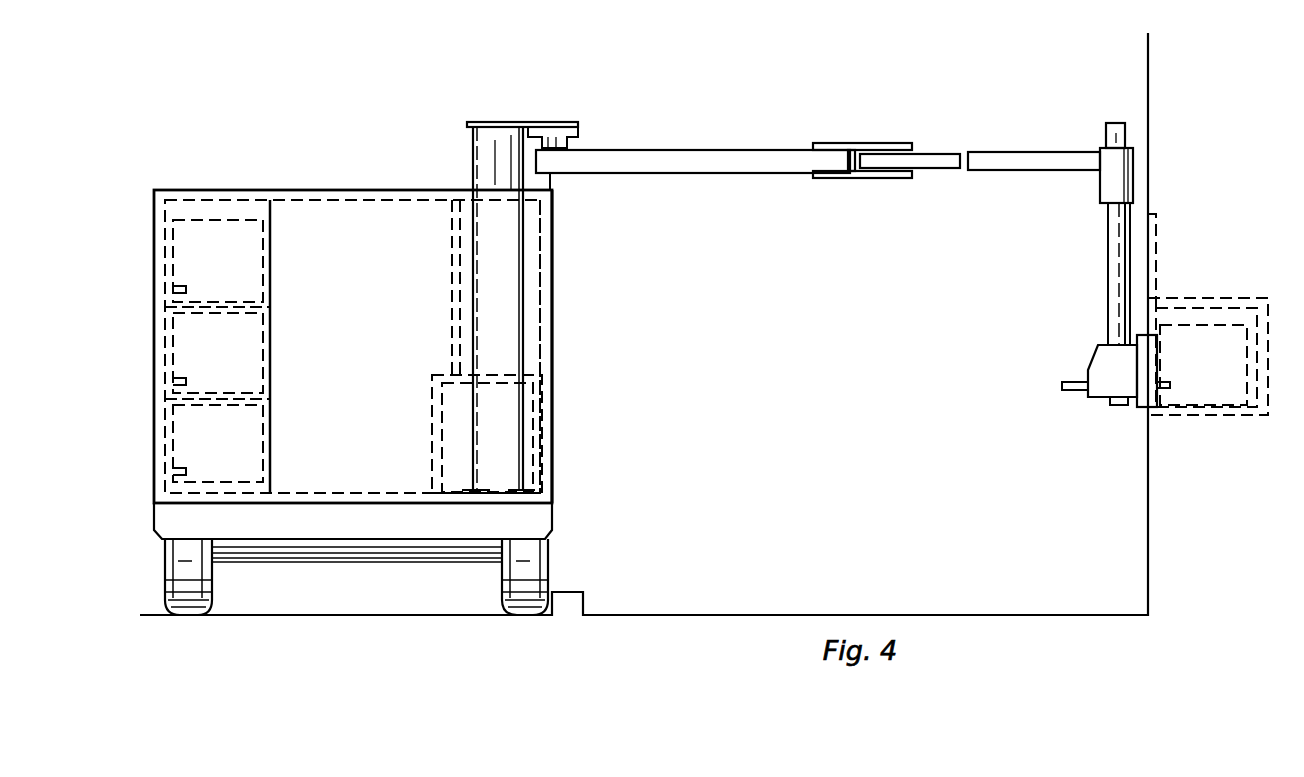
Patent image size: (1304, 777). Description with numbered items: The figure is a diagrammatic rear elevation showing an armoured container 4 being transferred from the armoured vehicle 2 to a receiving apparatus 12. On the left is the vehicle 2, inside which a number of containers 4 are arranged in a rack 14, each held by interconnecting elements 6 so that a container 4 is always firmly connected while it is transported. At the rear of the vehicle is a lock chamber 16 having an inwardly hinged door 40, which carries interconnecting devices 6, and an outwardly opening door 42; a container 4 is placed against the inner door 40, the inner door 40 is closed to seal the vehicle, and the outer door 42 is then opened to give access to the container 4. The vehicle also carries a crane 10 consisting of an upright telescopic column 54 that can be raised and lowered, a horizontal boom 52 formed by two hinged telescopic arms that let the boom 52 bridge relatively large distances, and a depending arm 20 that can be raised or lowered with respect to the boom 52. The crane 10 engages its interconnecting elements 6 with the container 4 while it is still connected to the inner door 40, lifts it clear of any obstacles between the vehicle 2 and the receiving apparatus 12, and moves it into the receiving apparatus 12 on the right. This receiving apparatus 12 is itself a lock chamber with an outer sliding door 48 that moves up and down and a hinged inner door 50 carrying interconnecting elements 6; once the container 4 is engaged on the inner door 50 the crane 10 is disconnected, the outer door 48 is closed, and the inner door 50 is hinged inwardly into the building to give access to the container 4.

The armoured vehicle 2 is at (278, 157).
The armoured container 4 is at (187, 248).
The interconnecting elements 6 is at (183, 380).
The crane 10 is at (888, 178).
The receiving apparatus 12 is at (1213, 300).
The rack 14 is at (170, 363).
The lock chamber 16 is at (460, 468).
The depending arm 20 is at (1103, 363).
The inwardly hinged door 40 is at (432, 418).
The outwardly opening door 42 is at (547, 432).
The outer sliding door 48 is at (1152, 232).
The inner door 50 is at (1263, 415).
The horizontal boom 52 is at (755, 158).
The upright telescopic column 54 is at (500, 267).